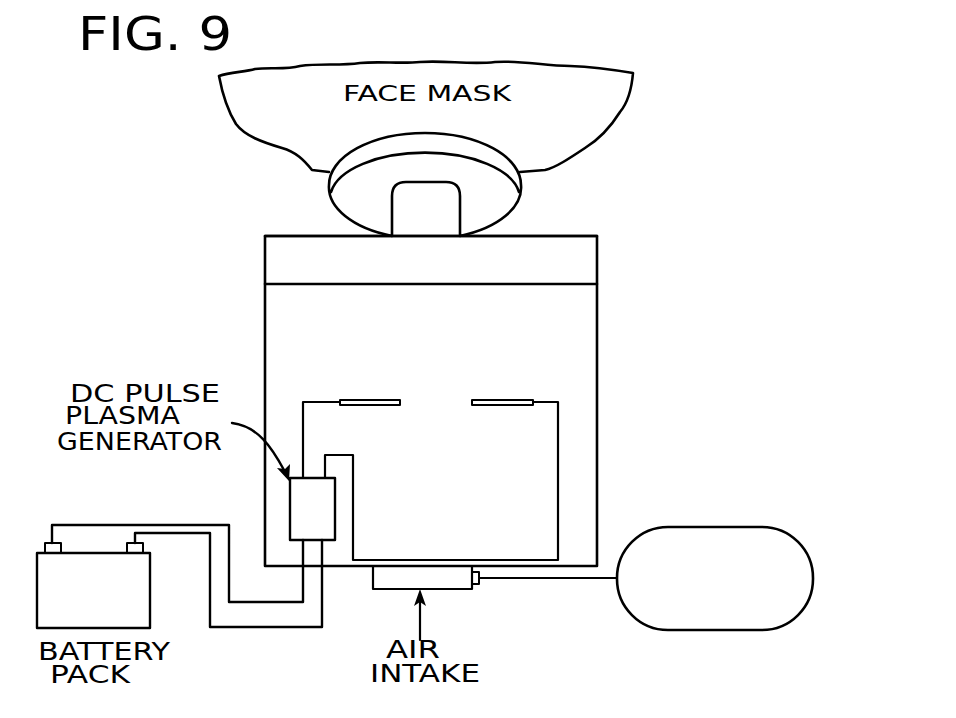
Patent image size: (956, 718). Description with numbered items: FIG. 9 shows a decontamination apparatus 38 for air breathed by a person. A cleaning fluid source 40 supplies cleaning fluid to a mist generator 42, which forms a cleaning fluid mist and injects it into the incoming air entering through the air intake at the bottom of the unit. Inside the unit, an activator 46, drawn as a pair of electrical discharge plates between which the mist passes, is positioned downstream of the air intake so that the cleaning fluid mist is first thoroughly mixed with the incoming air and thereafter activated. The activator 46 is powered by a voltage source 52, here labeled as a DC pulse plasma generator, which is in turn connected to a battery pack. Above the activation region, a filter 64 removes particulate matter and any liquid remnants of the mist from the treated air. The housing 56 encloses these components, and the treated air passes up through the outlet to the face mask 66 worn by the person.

The decontamination apparatus 38 is at (609, 443).
The cleaning fluid source 40 is at (757, 527).
The mist generator 42 is at (475, 586).
The activator 46 is at (373, 391).
The voltage source 52 is at (290, 506).
The housing 56 is at (598, 378).
The filter 64 is at (598, 255).
The face mask 66 is at (622, 100).